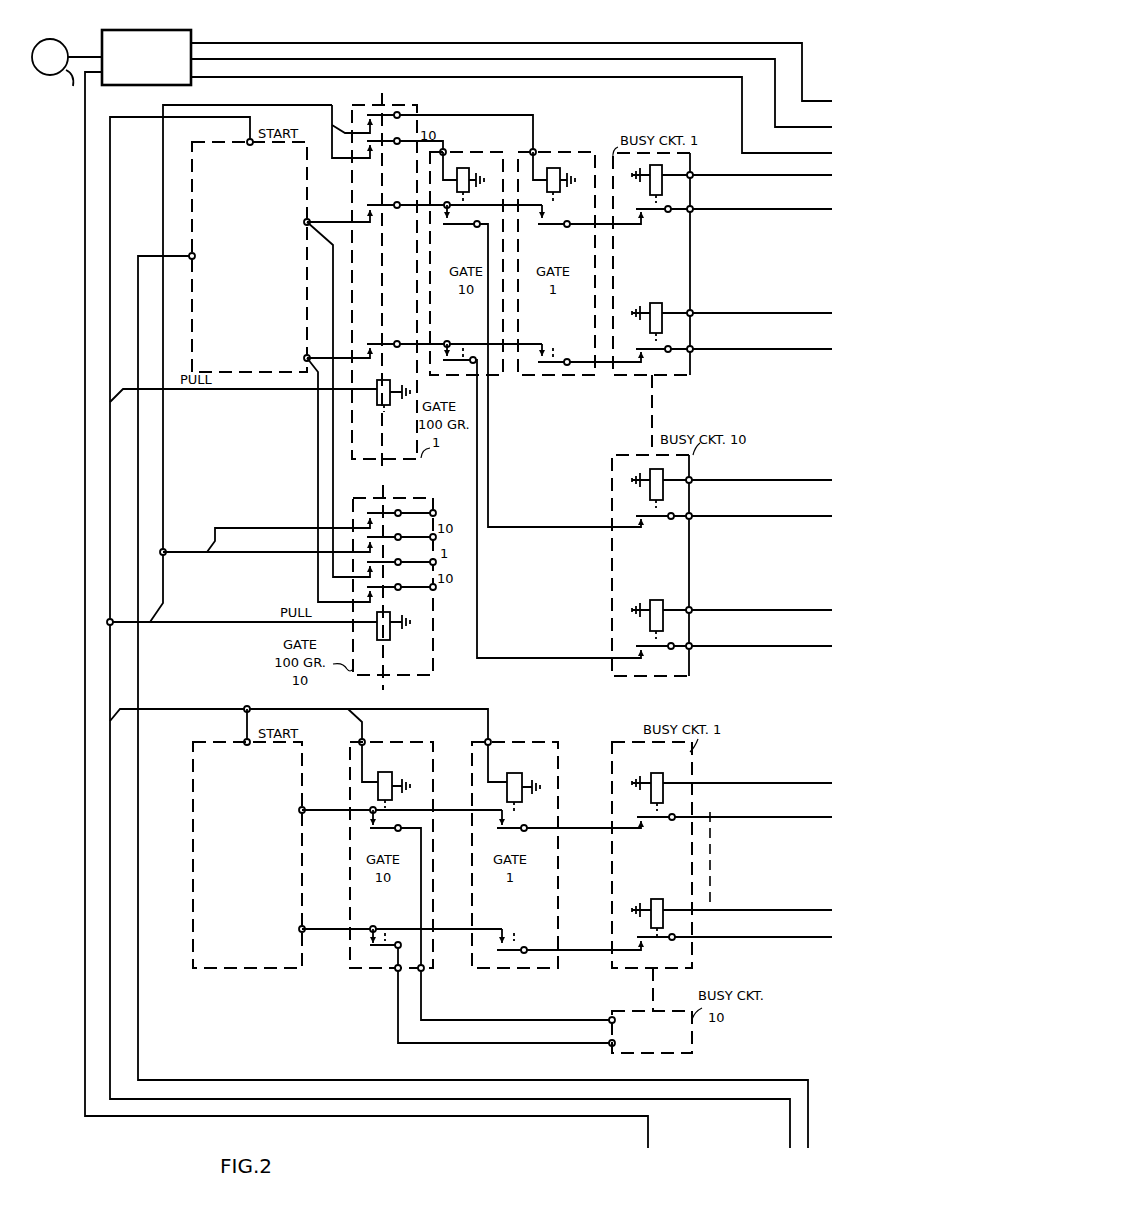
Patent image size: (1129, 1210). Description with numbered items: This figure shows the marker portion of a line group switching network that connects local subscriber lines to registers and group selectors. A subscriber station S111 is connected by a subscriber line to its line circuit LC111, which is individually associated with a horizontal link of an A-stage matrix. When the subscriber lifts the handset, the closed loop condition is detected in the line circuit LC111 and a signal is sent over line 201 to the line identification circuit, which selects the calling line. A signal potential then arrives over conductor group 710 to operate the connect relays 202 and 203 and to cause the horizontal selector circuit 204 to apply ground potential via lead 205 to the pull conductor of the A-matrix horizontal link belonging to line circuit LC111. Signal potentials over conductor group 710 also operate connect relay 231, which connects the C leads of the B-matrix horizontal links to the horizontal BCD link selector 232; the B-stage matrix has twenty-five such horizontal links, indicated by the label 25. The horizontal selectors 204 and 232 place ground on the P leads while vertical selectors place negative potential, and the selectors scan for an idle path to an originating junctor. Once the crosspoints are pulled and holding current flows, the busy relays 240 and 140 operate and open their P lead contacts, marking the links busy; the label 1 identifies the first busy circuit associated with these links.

The subscriber station S111 is at (64, 31).
The line circuit LC111 is at (162, 28).
The line 201 is at (80, 318).
The connect relay 202 is at (386, 406).
The connect relay 203 is at (556, 193).
The horizontal selector circuit 204 is at (249, 257).
The lead 205 is at (342, 219).
The connect relay 231 is at (528, 765).
The horizontal BCD link selector 232 is at (247, 855).
The busy relay 240 is at (671, 765).
The busy relay 140 is at (662, 171).
The busy circuit conductor 1 is at (718, 813).
The horizontal links 25 is at (728, 934).
The conductor group 710 is at (750, 1100).